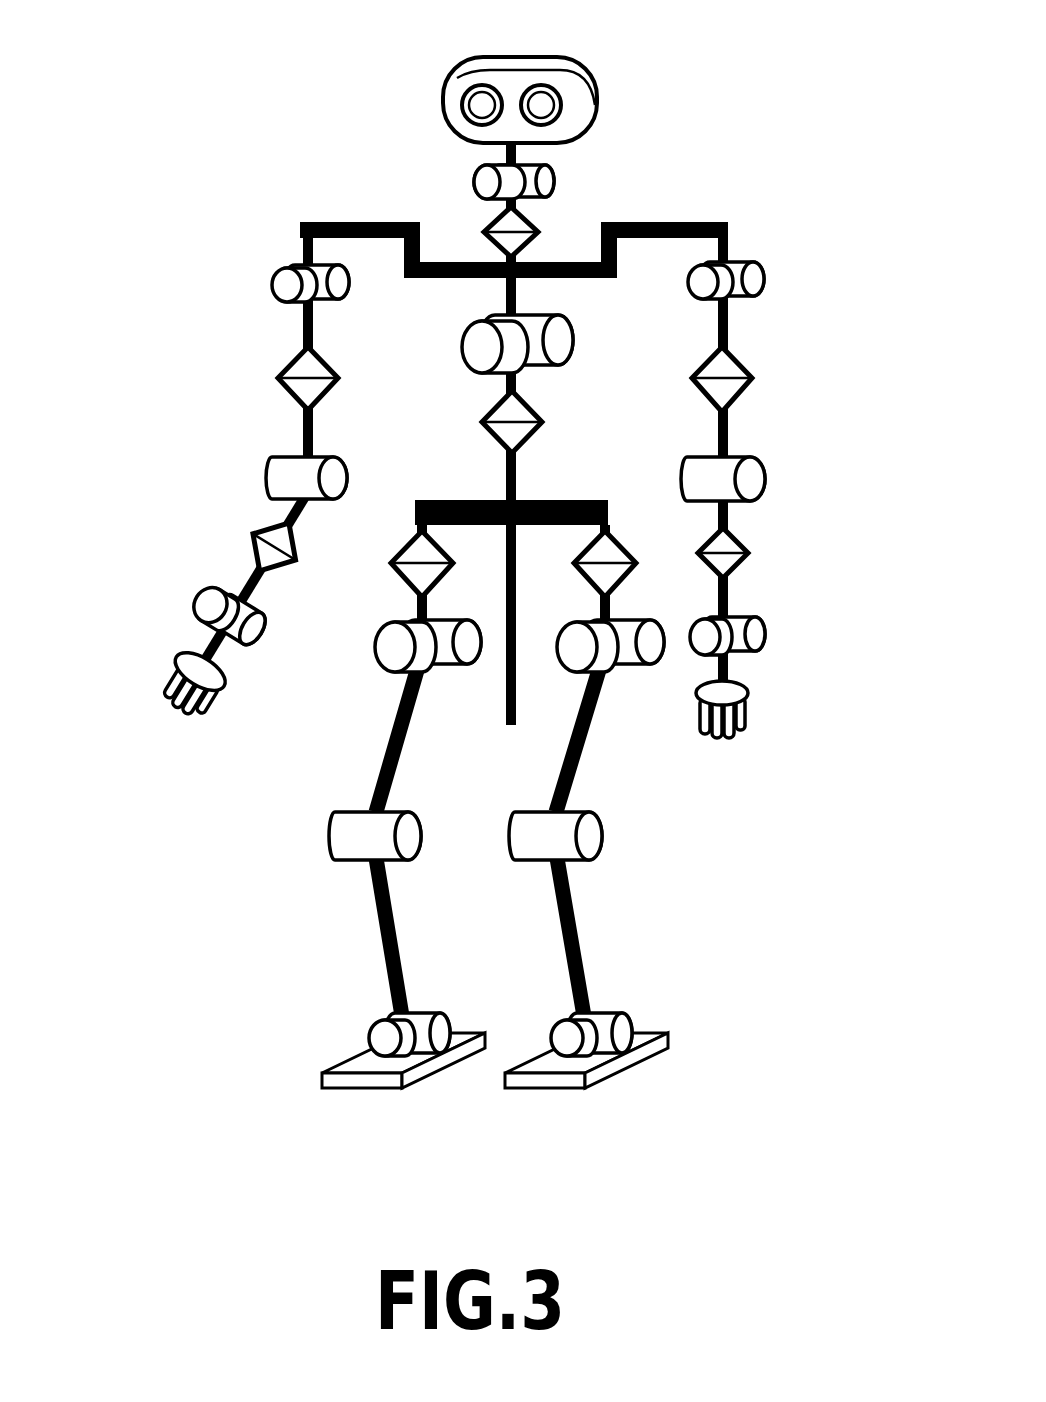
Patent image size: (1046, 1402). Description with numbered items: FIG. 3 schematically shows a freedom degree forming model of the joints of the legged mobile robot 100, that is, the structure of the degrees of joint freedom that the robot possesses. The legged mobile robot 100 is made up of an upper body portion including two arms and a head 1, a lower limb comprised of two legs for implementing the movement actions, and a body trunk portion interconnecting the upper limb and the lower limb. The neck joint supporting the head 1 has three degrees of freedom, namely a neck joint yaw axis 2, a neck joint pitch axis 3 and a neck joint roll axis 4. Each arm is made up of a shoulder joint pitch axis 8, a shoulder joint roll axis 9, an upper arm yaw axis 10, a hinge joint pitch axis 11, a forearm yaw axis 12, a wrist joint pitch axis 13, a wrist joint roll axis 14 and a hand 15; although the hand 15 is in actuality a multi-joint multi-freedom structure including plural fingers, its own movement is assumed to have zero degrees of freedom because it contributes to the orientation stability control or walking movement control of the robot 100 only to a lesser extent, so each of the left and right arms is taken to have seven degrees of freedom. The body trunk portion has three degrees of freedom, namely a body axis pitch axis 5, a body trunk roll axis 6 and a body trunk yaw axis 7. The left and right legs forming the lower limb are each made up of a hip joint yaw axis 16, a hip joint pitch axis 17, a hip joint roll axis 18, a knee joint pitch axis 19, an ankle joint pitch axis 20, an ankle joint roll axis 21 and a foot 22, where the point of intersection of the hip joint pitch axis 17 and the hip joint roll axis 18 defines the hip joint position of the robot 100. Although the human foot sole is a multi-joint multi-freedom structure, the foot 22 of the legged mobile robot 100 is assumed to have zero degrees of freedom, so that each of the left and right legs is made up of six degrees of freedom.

The head 1 is at (573, 63).
The neck joint yaw axis 2 is at (530, 218).
The neck joint pitch axis 3 is at (547, 183).
The neck joint roll axis 4 is at (548, 162).
The body axis pitch axis 5 is at (562, 350).
The body trunk roll axis 6 is at (545, 315).
The body trunk yaw axis 7 is at (530, 435).
The shoulder joint pitch axis 8 is at (282, 270).
The shoulder joint roll axis 9 is at (290, 285).
The upper arm yaw axis 10 is at (295, 368).
The hinge joint pitch axis 11 is at (280, 468).
The forearm yaw axis 12 is at (258, 532).
The wrist joint pitch axis 13 is at (222, 602).
The wrist joint roll axis 14 is at (208, 612).
The hand 15 is at (190, 670).
The hip joint yaw axis 16 is at (407, 556).
The hip joint pitch axis 17 is at (382, 617).
The hip joint roll axis 18 is at (395, 650).
The knee joint pitch axis 19 is at (345, 835).
The ankle joint pitch axis 20 is at (442, 1035).
The ankle joint roll axis 21 is at (428, 1014).
The foot 22 is at (350, 1065).
The legged mobile robot 100 is at (312, 755).